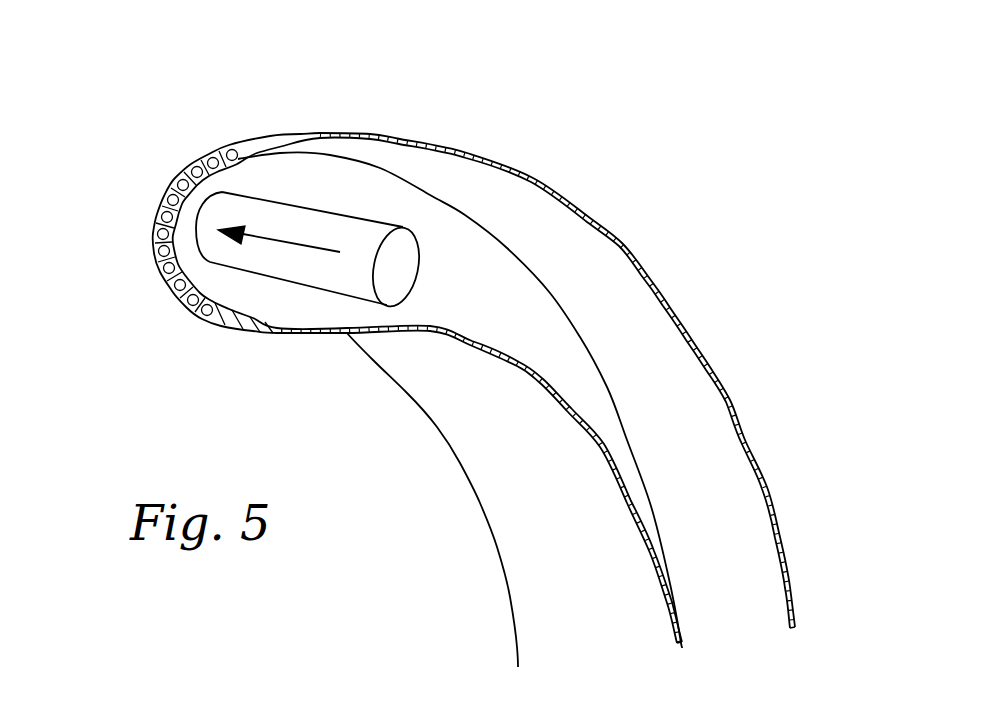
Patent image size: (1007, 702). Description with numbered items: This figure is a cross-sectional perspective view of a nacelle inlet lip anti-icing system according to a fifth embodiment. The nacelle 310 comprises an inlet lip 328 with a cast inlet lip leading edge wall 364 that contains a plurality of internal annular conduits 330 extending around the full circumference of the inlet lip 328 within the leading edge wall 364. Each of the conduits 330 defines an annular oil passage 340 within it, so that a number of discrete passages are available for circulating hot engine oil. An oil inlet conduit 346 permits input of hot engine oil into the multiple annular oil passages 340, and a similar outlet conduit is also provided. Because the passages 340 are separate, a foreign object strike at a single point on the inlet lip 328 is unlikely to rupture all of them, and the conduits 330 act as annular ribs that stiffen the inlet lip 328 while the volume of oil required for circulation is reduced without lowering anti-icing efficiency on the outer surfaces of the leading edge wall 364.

The nacelle 310 is at (630, 243).
The inlet lip 328 is at (157, 238).
The internal annular conduits 330 is at (163, 189).
The annular oil passage 340 is at (207, 311).
The oil inlet conduit 346 is at (357, 215).
The inlet lip leading edge wall 364 is at (237, 320).